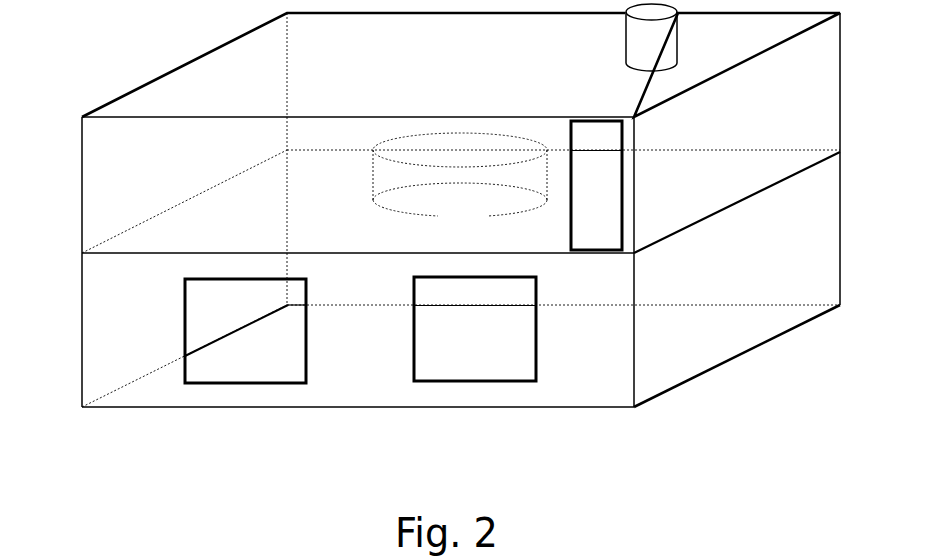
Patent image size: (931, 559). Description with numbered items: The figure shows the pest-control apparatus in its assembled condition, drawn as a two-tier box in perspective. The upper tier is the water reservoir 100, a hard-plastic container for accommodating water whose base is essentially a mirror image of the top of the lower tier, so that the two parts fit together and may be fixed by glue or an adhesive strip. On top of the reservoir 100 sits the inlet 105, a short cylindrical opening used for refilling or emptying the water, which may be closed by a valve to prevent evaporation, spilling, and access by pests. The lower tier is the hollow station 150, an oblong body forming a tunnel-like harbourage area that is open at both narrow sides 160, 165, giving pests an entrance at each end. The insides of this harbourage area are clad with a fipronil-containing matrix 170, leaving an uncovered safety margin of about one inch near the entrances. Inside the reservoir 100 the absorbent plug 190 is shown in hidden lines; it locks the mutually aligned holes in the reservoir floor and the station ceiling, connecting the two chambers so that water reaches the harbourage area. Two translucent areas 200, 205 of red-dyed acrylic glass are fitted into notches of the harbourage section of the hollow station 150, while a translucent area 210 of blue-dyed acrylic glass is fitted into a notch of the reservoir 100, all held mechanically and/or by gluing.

The water reservoir 100 is at (151, 45).
The inlet 105 is at (651, 37).
The hollow station 150 is at (162, 425).
The open narrow side 160 is at (150, 331).
The open narrow side 165 is at (813, 266).
The fipronil-containing matrix 170 is at (698, 351).
The absorbent plug 190 is at (477, 201).
The translucent area 200 is at (280, 366).
The translucent area 205 is at (503, 362).
The translucent area 210 is at (615, 218).